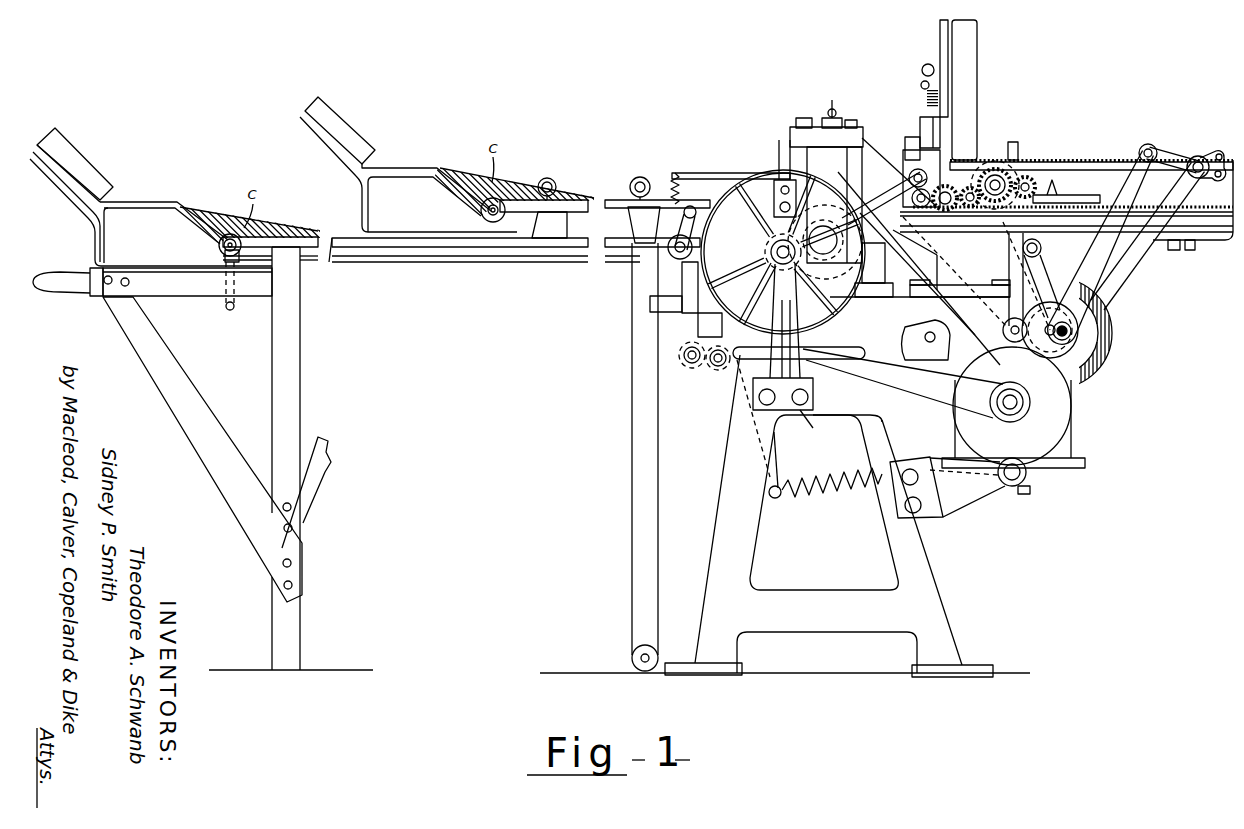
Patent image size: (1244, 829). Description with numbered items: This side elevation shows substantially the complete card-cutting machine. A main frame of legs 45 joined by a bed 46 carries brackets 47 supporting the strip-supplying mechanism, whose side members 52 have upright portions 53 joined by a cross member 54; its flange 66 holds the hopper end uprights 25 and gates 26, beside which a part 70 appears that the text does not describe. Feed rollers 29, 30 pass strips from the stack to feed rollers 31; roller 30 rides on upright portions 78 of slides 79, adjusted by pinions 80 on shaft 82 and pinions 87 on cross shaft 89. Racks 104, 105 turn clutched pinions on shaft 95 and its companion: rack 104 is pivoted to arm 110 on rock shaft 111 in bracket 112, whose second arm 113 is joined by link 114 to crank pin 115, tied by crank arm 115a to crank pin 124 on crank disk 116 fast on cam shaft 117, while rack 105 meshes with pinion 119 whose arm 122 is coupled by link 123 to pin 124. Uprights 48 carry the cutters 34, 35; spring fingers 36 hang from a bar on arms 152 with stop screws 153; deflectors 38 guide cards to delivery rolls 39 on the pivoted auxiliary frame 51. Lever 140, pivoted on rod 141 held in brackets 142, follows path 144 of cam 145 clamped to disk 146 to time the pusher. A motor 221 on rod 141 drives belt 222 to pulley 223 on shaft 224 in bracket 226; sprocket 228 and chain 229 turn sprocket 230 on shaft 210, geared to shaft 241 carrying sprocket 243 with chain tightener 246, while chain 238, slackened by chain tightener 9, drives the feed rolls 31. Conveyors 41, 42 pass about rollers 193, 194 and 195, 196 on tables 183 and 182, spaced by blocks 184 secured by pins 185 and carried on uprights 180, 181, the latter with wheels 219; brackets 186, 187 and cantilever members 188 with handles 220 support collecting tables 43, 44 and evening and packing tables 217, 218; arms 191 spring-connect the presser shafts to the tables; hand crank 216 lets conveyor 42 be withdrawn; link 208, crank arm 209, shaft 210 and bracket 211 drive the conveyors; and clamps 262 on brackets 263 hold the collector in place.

The chain tightener 9 is at (1032, 239).
The end uprights 25 is at (965, 77).
The gates 26 is at (942, 50).
The feed roller 29 is at (972, 157).
The feed roller 30 is at (1020, 163).
The feed rollers 31 is at (862, 170).
The rotary cutters 34 is at (884, 192).
The rotary cutters 35 is at (825, 251).
The spring fingers 36 is at (870, 250).
The deflectors 38 is at (800, 127).
The delivery rolls 39 is at (781, 173).
The endless conveyor 41 is at (658, 200).
The endless conveyor 42 is at (463, 249).
The collecting table 43 is at (467, 187).
The collecting table 44 is at (200, 227).
The legs 45 is at (933, 572).
The bed or cap member 46 is at (928, 345).
The brackets 47 is at (1160, 241).
The uprights 48 is at (868, 133).
The auxiliary frame 51 is at (771, 210).
The side members 52 is at (1098, 205).
The upright portions 53 is at (908, 155).
The cross member 54 is at (912, 140).
The upstanding flange 66 is at (930, 128).
The bolt 70 is at (927, 68).
The upright portions 78 is at (1015, 140).
The slides 79 is at (1063, 197).
The pinions 80 is at (1050, 178).
The transverse shaft 82 is at (1033, 195).
The pinions 87 is at (950, 207).
The cross shaft 89 is at (975, 205).
The shaft 95 is at (928, 205).
The rack 104 is at (1067, 161).
The rack 105 is at (1092, 216).
The arm 110 is at (1228, 150).
The rock shaft 111 is at (1220, 153).
The bracket 112 is at (1225, 205).
The second arm 113 is at (1203, 205).
The link 114 is at (1123, 258).
The crank pin 115 is at (1072, 331).
The crank arm 115a is at (1070, 338).
The crank disk 116 is at (1110, 375).
The cam shaft 117 is at (1048, 336).
The pinion 119 is at (1197, 208).
The arm 122 is at (1160, 165).
The link 123 is at (1135, 173).
The second crank pin 124 is at (1095, 350).
The lever 140 is at (1020, 345).
The rod 141 is at (1017, 480).
The brackets 142 is at (958, 497).
The cam path 144 is at (1072, 380).
The cam 145 is at (1095, 312).
The disk 146 is at (1003, 327).
The arms 152 is at (812, 127).
The stop screws 153 is at (833, 118).
The uprights 180 is at (284, 405).
The uprights 181 is at (650, 518).
The table 182 is at (507, 249).
The table 183 is at (580, 207).
The blocks 184 is at (557, 240).
The pins 185 is at (553, 180).
The brackets 186 is at (364, 207).
The bracket 187 is at (117, 235).
The cantilever members 188 is at (102, 296).
The arms 191 is at (715, 173).
The roller 193 is at (760, 187).
The roller 194 is at (500, 203).
The roller 195 is at (731, 274).
The roller 196 is at (230, 233).
The link 208 is at (695, 327).
The crank arm 209 is at (672, 362).
The shaft 210 is at (687, 363).
The bracket 211 is at (730, 410).
The hand crank 216 is at (229, 309).
The evening table 217 is at (162, 203).
The packing table 218 is at (72, 187).
The rollers or wheels 219 is at (632, 655).
The handles 220 is at (55, 282).
The electric motor 221 is at (1047, 413).
The belt 222 is at (920, 395).
The pulley 223 is at (838, 290).
The shaft 224 is at (796, 372).
The bracket 226 is at (813, 428).
The sprocket 228 is at (825, 322).
The chain 229 is at (667, 303).
The sprocket 230 is at (692, 368).
The chain 238 is at (951, 272).
The shaft 241 is at (715, 367).
The sprocket 243 is at (722, 370).
The chain tightener 246 is at (782, 460).
The clamps 262 is at (695, 340).
The brackets 263 is at (682, 317).